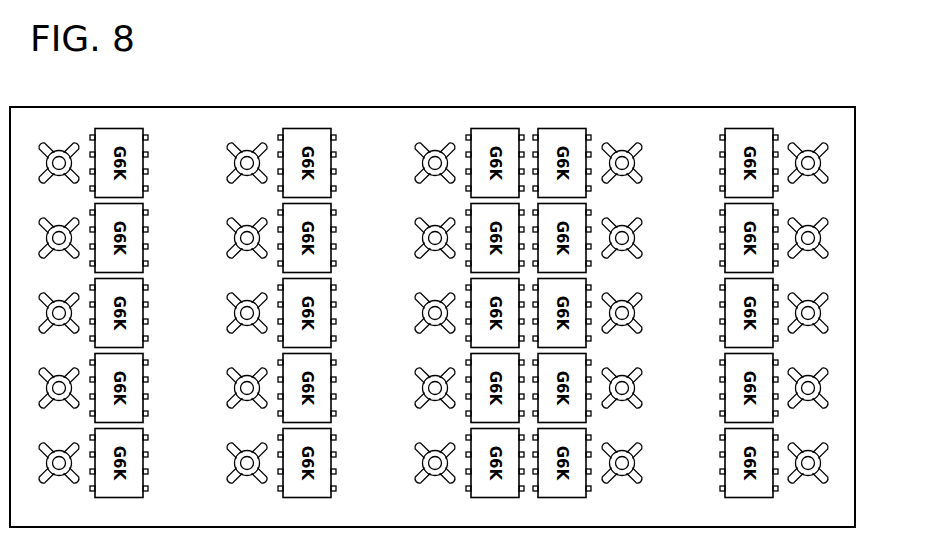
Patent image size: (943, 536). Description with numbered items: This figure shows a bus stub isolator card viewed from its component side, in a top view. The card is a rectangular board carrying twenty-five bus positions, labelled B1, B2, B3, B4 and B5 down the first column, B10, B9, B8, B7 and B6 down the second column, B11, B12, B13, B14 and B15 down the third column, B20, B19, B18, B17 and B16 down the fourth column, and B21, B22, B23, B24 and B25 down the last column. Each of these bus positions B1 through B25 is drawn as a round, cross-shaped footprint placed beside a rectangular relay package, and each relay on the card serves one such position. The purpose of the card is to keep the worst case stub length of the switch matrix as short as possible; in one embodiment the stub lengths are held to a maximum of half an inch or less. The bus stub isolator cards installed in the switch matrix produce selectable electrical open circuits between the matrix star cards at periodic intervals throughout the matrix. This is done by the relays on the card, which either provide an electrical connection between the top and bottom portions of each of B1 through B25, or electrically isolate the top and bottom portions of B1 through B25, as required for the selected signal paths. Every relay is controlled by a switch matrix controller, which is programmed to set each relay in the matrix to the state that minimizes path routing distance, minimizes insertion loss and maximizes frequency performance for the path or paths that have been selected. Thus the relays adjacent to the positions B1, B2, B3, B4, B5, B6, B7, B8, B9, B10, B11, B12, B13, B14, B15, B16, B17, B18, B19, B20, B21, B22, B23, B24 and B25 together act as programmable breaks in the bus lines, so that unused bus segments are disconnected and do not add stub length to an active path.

The bus stub B1 is at (58, 166).
The bus stub B2 is at (58, 241).
The bus stub B3 is at (58, 316).
The bus stub B4 is at (58, 391).
The bus stub B5 is at (58, 466).
The bus stub B6 is at (246, 466).
The bus stub B7 is at (246, 391).
The bus stub B8 is at (246, 316).
The bus stub B9 is at (246, 241).
The bus stub B10 is at (246, 166).
The bus stub B11 is at (434, 166).
The bus stub B12 is at (434, 241).
The bus stub B13 is at (434, 316).
The bus stub B14 is at (434, 391).
The bus stub B15 is at (434, 466).
The bus stub B16 is at (621, 466).
The bus stub B17 is at (621, 391).
The bus stub B18 is at (621, 316).
The bus stub B19 is at (621, 241).
The bus stub B20 is at (621, 166).
The bus stub B21 is at (807, 166).
The bus stub B22 is at (807, 241).
The bus stub B23 is at (807, 316).
The bus stub B24 is at (807, 391).
The bus stub B25 is at (807, 466).